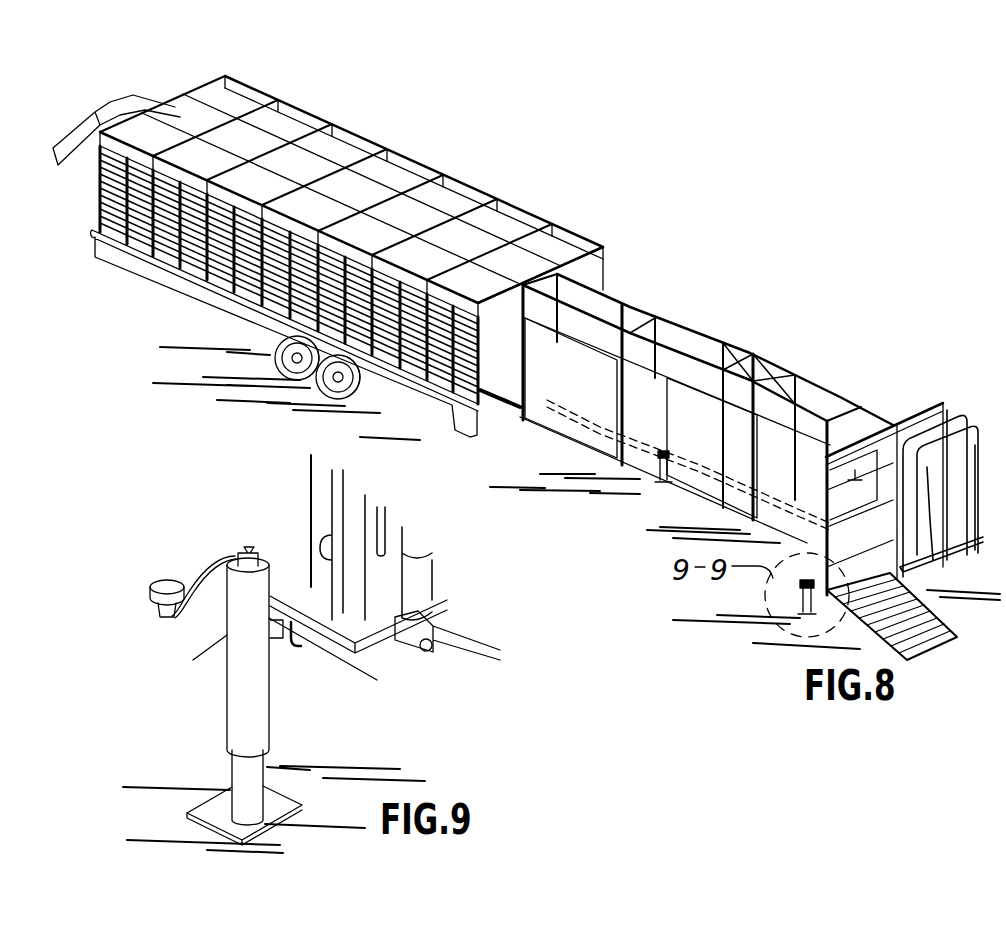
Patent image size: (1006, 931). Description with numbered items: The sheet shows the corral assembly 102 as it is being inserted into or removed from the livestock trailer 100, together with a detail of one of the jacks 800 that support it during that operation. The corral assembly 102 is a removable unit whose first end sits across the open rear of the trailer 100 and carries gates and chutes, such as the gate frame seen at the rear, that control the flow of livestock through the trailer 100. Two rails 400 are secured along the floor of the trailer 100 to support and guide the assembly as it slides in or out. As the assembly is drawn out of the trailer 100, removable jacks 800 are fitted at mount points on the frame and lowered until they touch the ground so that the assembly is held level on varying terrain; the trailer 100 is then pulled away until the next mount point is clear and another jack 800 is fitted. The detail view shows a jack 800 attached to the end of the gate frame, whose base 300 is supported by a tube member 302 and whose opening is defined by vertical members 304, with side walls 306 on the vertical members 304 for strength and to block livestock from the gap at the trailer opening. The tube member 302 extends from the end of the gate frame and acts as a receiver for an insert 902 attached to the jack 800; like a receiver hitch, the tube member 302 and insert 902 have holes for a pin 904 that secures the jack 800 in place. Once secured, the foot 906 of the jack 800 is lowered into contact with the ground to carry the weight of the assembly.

In FIG. 8, the livestock trailer 100 is at (513, 183).
In FIG. 8, the corral assembly 102 is at (798, 355).
In FIG. 8, the rails 400 is at (507, 408).
In FIG. 8, the jack 800 is at (663, 485).
In FIG. 9, the jack 800 is at (220, 684).
In FIG. 9, the base 300 is at (293, 578).
In FIG. 9, the tube member 302 is at (322, 636).
In FIG. 9, the vertical members 304 is at (455, 633).
In FIG. 9, the side walls 306 is at (303, 479).
In FIG. 9, the insert 902 is at (269, 637).
In FIG. 9, the pin 904 is at (309, 662).
In FIG. 9, the foot 906 is at (216, 812).